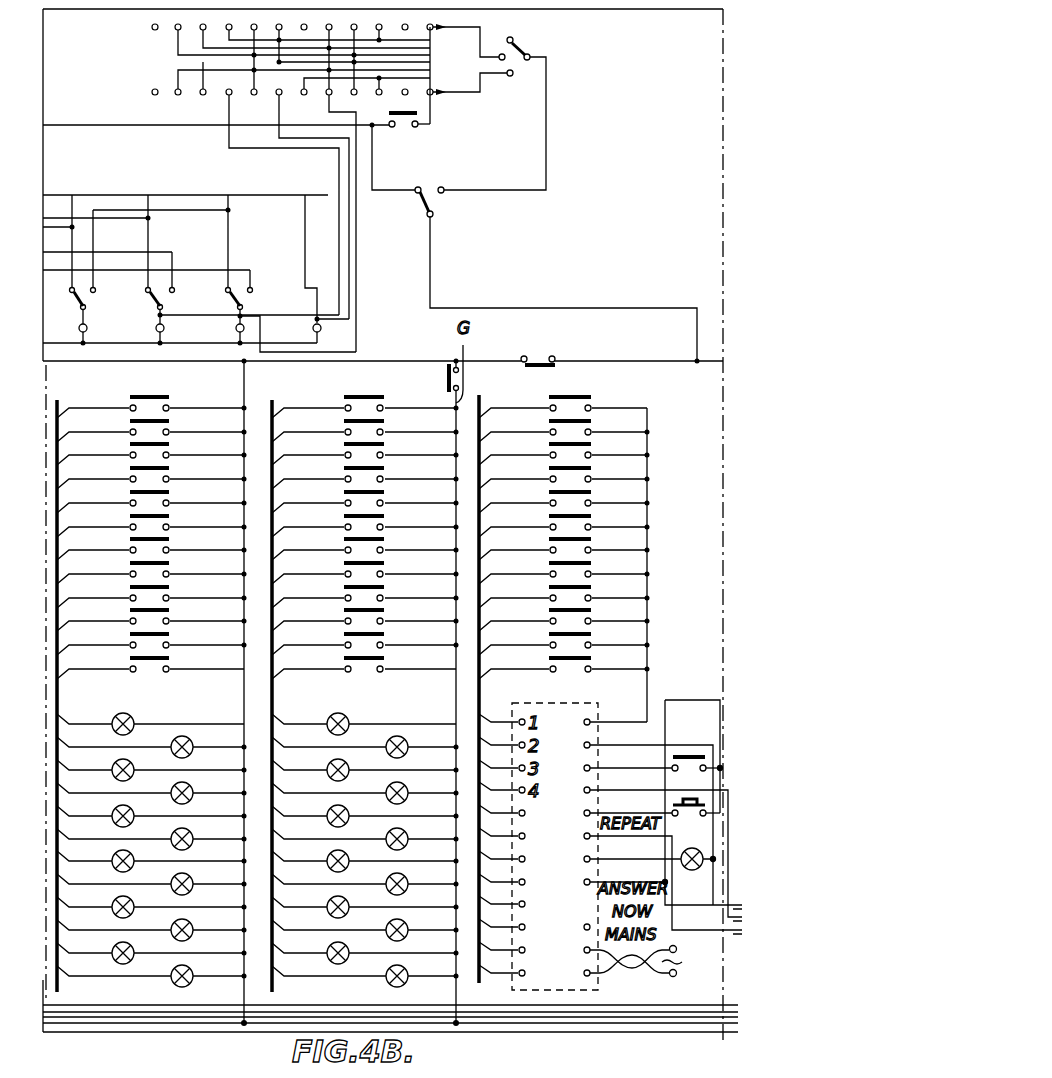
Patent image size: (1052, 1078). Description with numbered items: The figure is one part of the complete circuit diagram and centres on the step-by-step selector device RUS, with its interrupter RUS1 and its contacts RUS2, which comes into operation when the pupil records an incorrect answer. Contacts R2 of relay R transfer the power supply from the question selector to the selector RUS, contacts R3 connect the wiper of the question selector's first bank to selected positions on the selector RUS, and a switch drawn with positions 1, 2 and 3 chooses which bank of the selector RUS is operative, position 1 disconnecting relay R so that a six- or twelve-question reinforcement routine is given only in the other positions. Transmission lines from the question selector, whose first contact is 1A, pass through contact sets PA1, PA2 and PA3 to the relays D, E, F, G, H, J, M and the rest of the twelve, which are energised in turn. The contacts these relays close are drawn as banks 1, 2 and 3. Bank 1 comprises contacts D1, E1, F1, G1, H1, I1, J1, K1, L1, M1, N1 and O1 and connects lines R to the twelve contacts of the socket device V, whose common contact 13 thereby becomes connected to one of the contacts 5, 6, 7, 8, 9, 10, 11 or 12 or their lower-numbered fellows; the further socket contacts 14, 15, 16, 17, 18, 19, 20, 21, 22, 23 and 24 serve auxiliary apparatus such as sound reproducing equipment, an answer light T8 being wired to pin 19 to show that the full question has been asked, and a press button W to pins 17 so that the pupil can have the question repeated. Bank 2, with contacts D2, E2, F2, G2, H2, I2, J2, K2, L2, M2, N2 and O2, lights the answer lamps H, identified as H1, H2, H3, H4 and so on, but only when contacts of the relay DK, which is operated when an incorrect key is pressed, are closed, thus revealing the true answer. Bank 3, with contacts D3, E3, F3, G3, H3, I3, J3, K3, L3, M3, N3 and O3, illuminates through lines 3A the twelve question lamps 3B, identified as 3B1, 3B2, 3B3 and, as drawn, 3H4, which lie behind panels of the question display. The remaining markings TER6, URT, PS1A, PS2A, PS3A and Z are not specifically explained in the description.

The interrupter device RUS1 is at (152, 27).
The selector contacts RUS2 is at (152, 92).
The step-by-step selector device RUS is at (204, 157).
The relay contacts R3 is at (409, 129).
The relay contacts R2 is at (553, 263).
The set of contacts PA1 is at (245, 297).
The set of contacts PA2 is at (165, 297).
The set of contacts PA3 is at (88, 297).
The relay G is at (79, 328).
The relay F is at (156, 328).
The relay E is at (236, 328).
The relay D is at (313, 328).
The contact TER6 is at (537, 355).
The relay DK is at (446, 385).
The contact pair D1 is at (580, 394).
The contact pair D2 is at (372, 396).
The contact pair D3 is at (158, 396).
The contact pair E1 is at (550, 430).
The contact pair E2 is at (345, 430).
The contact pair E3 is at (130, 430).
The contact pair F1 is at (592, 444).
The contact pair G1 is at (592, 468).
The contact pair H1 is at (592, 492).
The contact pair I1 is at (592, 516).
The contact pair J1 is at (592, 539).
The contact pair K1 is at (592, 563).
The contact pair L1 is at (592, 587).
The contact pair M1 is at (592, 610).
The contact pair N1 is at (592, 634).
The contact pair O1 is at (592, 658).
The contact pair F2 is at (385, 444).
The contact pair G2 is at (385, 468).
The contact pair H2 is at (385, 492).
The contact pair I2 is at (385, 516).
The contact pair J2 is at (385, 539).
The contact pair K2 is at (385, 563).
The contact pair L2 is at (385, 587).
The contact pair M2 is at (385, 610).
The contact pair N2 is at (385, 634).
The contact pair O2 is at (385, 658).
The contact pair F3 is at (170, 444).
The contact pair G3 is at (170, 468).
The contact pair H3 is at (170, 492).
The contact pair I3 is at (170, 516).
The contact pair J3 is at (170, 539).
The contact pair K3 is at (170, 563).
The contact pair L3 is at (170, 587).
The contact pair M3 is at (170, 610).
The contact pair N3 is at (170, 634).
The contact pair O3 is at (170, 658).
The relay J is at (650, 468).
The contact bank 1 is at (580, 694).
The contact bank 2 is at (370, 697).
The contact bank 3 is at (156, 697).
The selector contact 1A is at (647, 682).
The lines 3A is at (58, 702).
The question lamps 3B is at (152, 735).
The question lamp 3B1 is at (113, 718).
The question lamp 3B2 is at (191, 741).
The question lamp 3B3 is at (113, 765).
The lamp 3H4 is at (191, 787).
The socket contact 5 is at (113, 812).
The socket contact 6 is at (191, 834).
The socket contact 7 is at (113, 858).
The socket contact 8 is at (191, 879).
The socket contact 9 is at (113, 904).
The socket contact 10 is at (191, 925).
The socket contact 11 is at (113, 950).
The socket contact 12 is at (191, 971).
The answer lamps H is at (378, 721).
The answer lamp H4 is at (406, 787).
The lines R is at (485, 706).
The plug and socket device V is at (556, 690).
The common contact 13 is at (605, 722).
The socket contact 14 is at (638, 820).
The socket contact 15 is at (617, 768).
The socket contact 16 is at (652, 850).
The socket pins 17 is at (617, 813).
The socket contact 18 is at (652, 880).
The socket pin 19 is at (622, 859).
The socket contact 20 is at (614, 882).
The socket contact 21 is at (571, 904).
The socket contact 22 is at (575, 927).
The socket contact 23 is at (614, 954).
The socket contact 24 is at (614, 969).
The relay M is at (680, 963).
The unit URT is at (703, 804).
The press button W is at (696, 815).
The answer light T8 is at (698, 873).
The supply line PS1A is at (132, 1023).
The supply line PS2A is at (264, 1013).
The supply line PS3A is at (150, 1005).
The line Z is at (470, 1023).